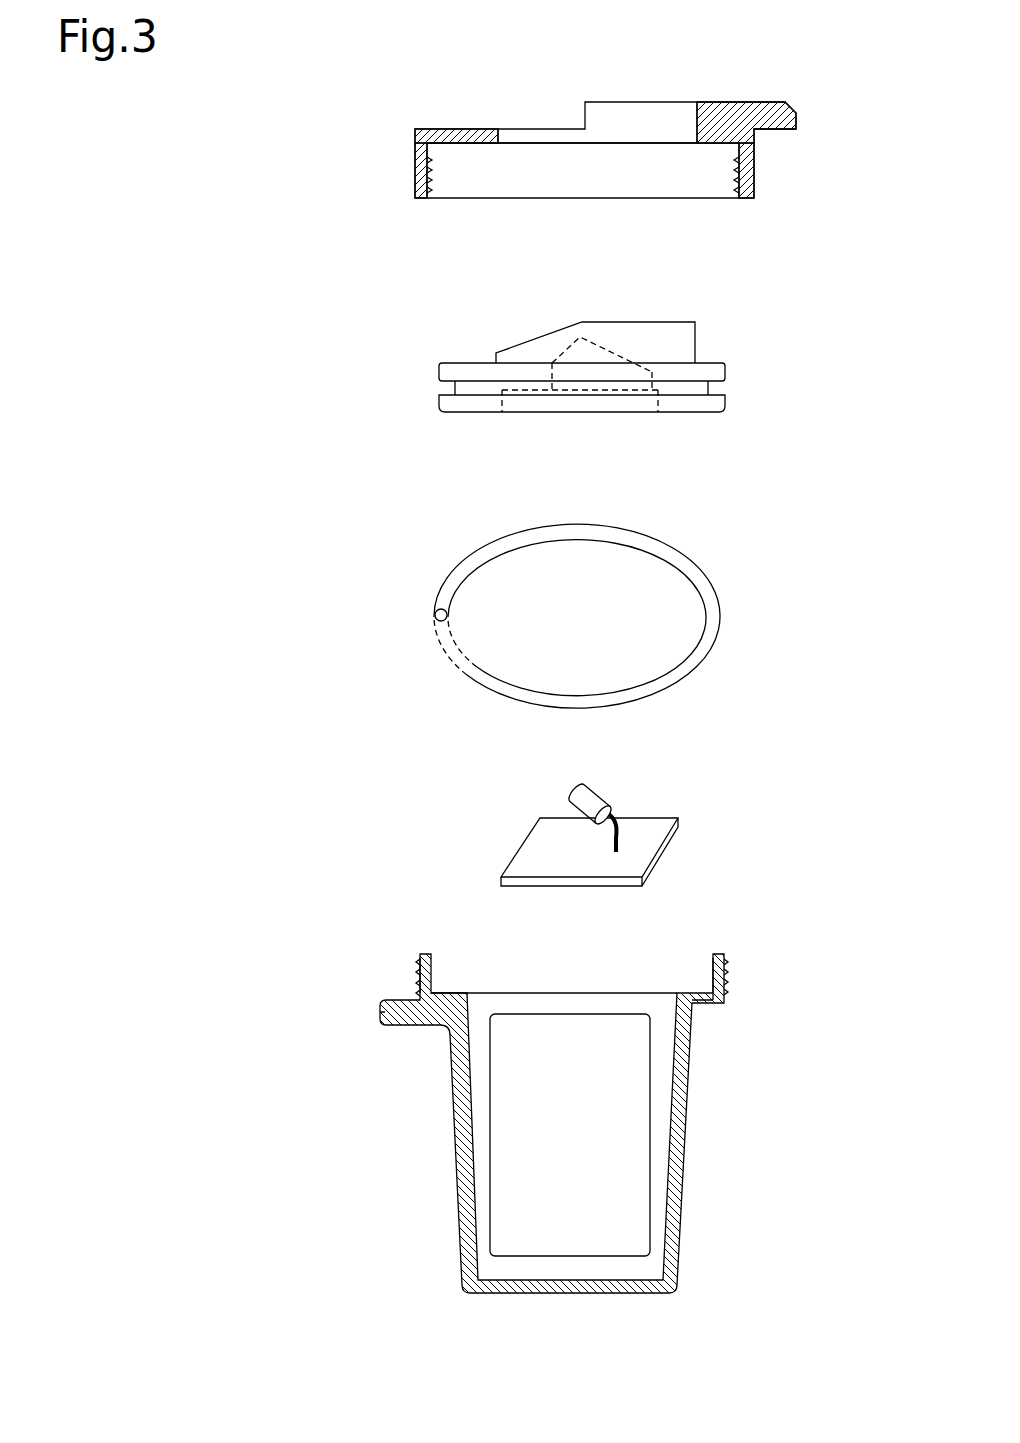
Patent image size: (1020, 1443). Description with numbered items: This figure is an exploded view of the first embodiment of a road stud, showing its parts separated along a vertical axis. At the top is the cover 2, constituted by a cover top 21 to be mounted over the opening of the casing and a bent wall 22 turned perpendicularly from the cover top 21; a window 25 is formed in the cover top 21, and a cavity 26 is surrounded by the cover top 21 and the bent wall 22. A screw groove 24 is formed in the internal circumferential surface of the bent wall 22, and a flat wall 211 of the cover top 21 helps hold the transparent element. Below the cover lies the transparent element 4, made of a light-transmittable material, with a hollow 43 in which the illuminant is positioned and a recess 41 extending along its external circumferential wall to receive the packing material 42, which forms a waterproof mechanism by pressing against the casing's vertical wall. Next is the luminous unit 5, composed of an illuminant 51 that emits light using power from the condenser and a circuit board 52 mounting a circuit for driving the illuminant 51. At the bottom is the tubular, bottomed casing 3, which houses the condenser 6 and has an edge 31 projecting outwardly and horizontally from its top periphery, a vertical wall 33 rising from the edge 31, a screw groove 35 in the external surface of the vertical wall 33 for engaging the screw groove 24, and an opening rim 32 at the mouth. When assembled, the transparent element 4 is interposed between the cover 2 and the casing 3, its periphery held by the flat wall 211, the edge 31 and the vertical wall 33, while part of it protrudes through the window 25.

The cover 2 is at (590, 148).
The cover top 21 is at (462, 129).
The bent wall 22 is at (415, 175).
The screw groove 24 is at (429, 172).
The window 25 is at (545, 136).
The cavity 26 is at (592, 182).
The flat wall 211 is at (478, 143).
The transparent element 4 is at (619, 391).
The recess 41 is at (487, 388).
The packing material 42 is at (715, 610).
The hollow 43 is at (600, 388).
The luminous unit 5 is at (632, 804).
The illuminant 51 is at (573, 800).
The circuit board 52 is at (645, 825).
The casing 3 is at (563, 1082).
The edge 31 is at (400, 1027).
The opening rim 32 is at (450, 990).
The vertical wall 33 is at (427, 955).
The screw groove 35 is at (416, 978).
The condenser 6 is at (627, 1203).